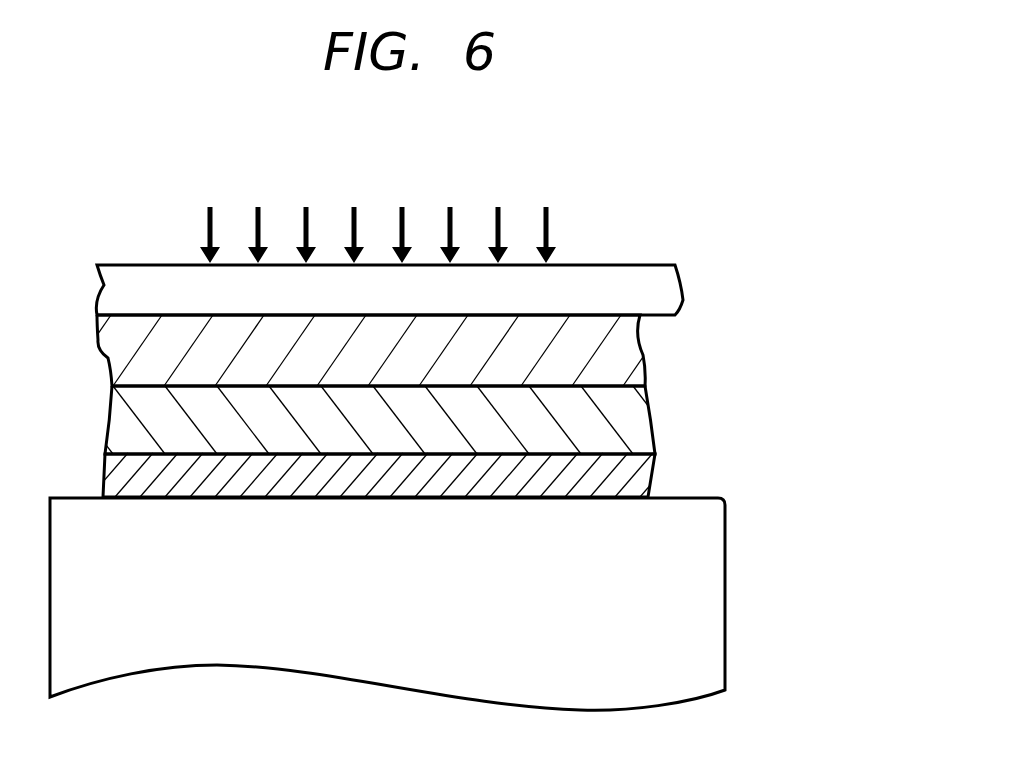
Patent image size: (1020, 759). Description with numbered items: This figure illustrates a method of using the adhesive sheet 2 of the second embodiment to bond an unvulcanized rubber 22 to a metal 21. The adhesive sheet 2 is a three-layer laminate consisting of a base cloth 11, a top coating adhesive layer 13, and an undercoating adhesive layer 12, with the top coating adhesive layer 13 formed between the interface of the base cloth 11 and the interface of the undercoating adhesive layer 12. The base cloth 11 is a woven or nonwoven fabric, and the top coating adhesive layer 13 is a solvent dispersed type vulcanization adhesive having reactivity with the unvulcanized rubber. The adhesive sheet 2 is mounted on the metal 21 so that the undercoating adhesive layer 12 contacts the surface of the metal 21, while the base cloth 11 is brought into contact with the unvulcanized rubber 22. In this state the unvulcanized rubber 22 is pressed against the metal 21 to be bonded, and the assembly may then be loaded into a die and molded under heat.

The unvulcanized rubber 22 is at (648, 282).
The base cloth 11 is at (637, 343).
The top coating adhesive layer 13 is at (648, 408).
The undercoating adhesive layer 12 is at (652, 465).
The adhesive sheet 2 is at (469, 399).
The metal 21 is at (715, 590).